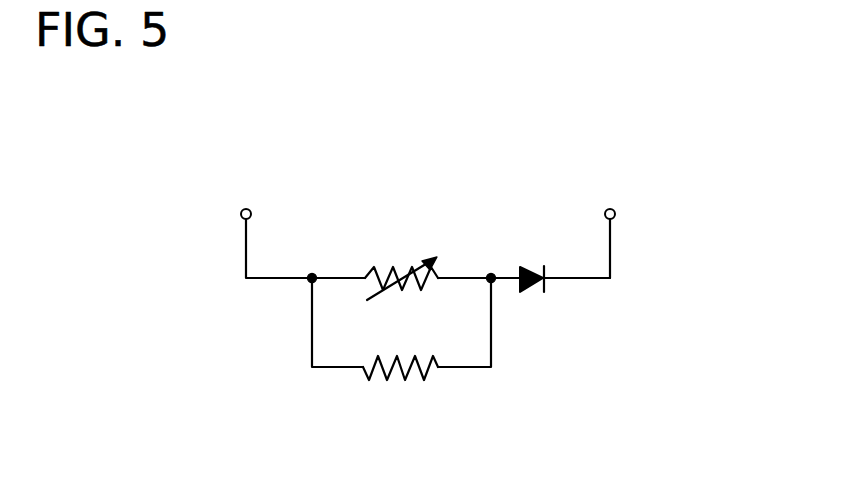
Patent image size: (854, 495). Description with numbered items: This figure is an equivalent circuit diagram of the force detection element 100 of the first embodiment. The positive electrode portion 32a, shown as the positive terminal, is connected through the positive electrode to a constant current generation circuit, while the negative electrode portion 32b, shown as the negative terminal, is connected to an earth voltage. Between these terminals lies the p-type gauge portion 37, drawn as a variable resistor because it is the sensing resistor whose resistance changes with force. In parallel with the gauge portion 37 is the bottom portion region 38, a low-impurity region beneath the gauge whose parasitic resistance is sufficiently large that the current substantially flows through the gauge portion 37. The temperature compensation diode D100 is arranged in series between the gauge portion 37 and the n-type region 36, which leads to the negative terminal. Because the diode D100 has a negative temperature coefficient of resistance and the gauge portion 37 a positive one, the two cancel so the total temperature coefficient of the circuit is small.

The force detection element 100 is at (626, 112).
The positive electrode portion 32a is at (240, 214).
The negative electrode portion 32b is at (616, 212).
The gauge portion 37 is at (390, 268).
The bottom portion region 38 is at (398, 381).
The temperature compensation diode D100 is at (537, 268).
The n-type region 36 is at (578, 282).